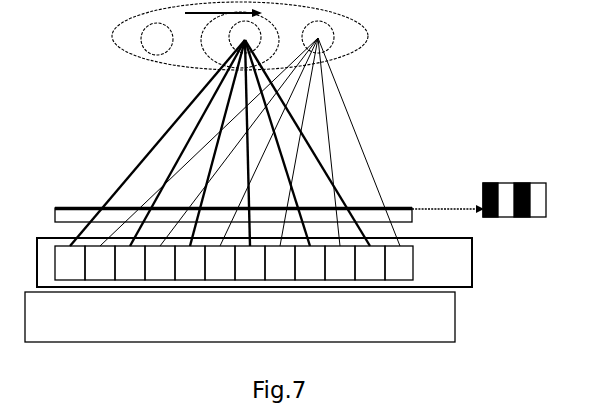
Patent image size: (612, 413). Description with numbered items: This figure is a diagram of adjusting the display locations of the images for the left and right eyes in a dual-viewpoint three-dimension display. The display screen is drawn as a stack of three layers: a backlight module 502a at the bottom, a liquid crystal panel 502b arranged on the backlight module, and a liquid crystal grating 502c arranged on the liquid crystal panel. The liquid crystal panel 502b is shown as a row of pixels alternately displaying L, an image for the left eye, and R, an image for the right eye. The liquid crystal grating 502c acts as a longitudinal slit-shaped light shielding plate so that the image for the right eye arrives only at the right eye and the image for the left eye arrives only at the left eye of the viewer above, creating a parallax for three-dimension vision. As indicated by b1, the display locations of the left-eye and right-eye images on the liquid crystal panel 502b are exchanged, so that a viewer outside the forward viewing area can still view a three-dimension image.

The backlight module 502a is at (240, 317).
The liquid crystal panel 502b is at (413, 270).
The liquid crystal grating 502c is at (403, 204).
The adjustment of display locations of images for left and right eyes b1 is at (472, 259).